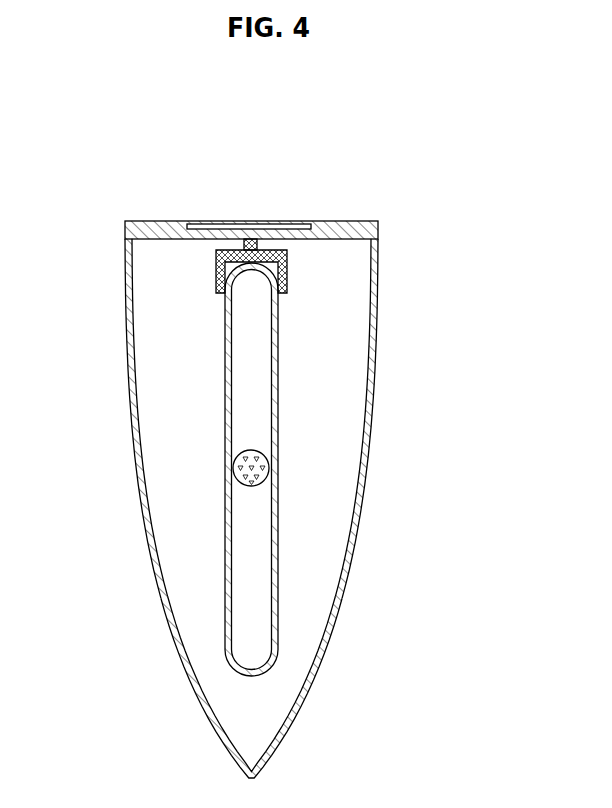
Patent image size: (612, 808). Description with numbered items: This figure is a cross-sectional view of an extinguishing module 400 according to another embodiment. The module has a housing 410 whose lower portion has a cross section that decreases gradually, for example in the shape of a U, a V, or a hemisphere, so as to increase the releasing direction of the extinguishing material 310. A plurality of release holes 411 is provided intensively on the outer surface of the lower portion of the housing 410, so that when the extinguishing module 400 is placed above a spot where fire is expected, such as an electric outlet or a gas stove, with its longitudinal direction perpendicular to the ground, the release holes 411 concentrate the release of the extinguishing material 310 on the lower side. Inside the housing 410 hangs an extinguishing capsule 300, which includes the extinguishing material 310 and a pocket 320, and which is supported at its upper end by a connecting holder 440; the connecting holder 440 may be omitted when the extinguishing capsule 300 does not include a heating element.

The extinguishing module 400 is at (270, 107).
The housing 410 is at (376, 382).
The release holes 411 is at (336, 636).
The connecting holder 440 is at (216, 268).
The extinguishing capsule 300 is at (360, 469).
The extinguishing material 310 is at (268, 471).
The pocket 320 is at (278, 523).